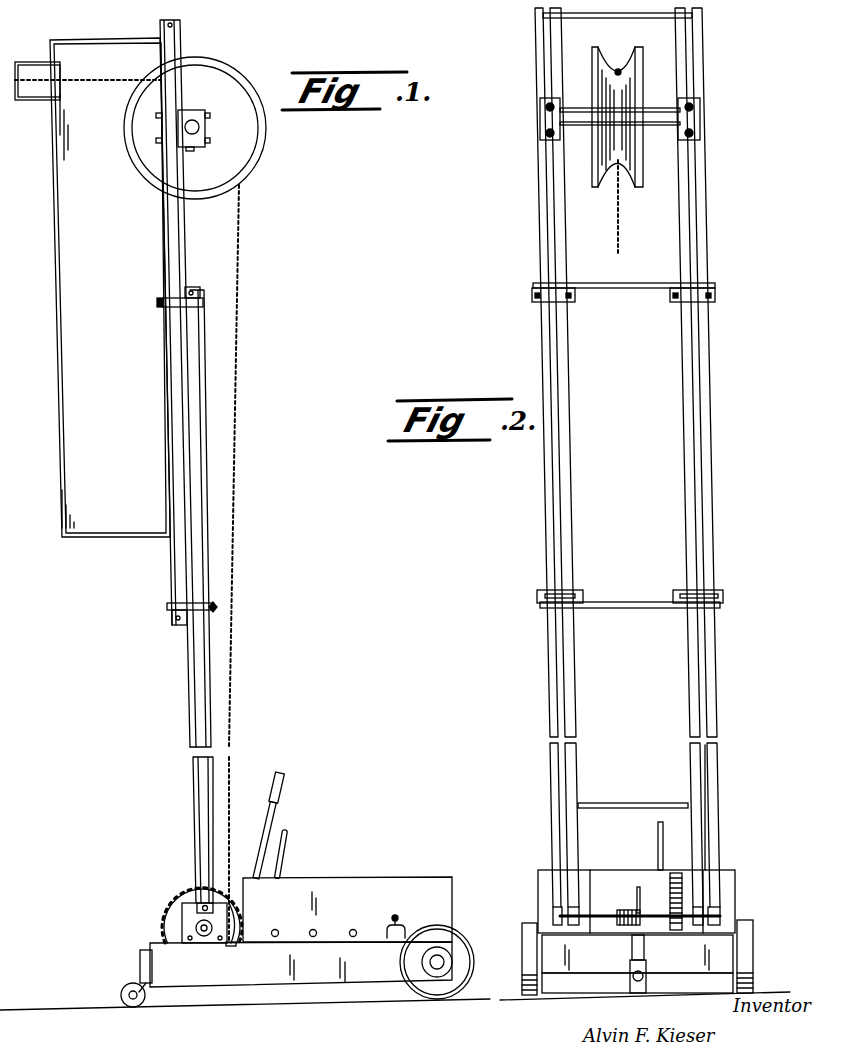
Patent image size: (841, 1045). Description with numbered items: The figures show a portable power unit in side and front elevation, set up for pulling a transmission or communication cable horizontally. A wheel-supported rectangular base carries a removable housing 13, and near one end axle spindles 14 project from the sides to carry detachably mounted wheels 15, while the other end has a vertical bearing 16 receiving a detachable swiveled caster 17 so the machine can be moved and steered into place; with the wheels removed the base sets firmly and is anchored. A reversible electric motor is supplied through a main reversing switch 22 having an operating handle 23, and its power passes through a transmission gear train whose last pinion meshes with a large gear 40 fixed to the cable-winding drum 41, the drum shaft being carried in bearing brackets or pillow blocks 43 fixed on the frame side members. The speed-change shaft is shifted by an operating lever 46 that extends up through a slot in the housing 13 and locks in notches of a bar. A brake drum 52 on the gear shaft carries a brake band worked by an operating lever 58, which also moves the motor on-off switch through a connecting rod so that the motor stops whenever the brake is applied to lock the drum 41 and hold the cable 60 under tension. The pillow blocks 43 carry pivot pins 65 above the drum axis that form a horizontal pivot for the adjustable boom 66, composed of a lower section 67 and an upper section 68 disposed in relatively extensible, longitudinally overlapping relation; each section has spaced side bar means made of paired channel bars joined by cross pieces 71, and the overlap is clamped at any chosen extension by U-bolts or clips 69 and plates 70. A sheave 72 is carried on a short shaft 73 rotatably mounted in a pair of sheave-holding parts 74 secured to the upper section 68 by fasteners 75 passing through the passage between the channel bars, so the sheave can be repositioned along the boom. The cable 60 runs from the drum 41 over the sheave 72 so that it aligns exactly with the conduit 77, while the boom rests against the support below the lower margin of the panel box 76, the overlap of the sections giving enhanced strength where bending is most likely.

In FIG. 1, the removable housing 13 is at (372, 878).
In FIG. 1, the axle spindles 14 is at (443, 957).
In FIG. 1, the wheels 15 is at (444, 971).
In FIG. 2, the wheels 15 is at (753, 950).
In FIG. 1, the vertical bearing 16 is at (140, 957).
In FIG. 1, the swiveled wheel or caster 17 is at (125, 1003).
In FIG. 2, the swiveled wheel or caster 17 is at (646, 978).
In FIG. 1, the main reversing switch 22 is at (403, 927).
In FIG. 1, the operating handle 23 is at (394, 915).
In FIG. 1, the large gear 40 is at (185, 892).
In FIG. 1, the cable-winding drum 41 is at (190, 897).
In FIG. 1, the bearing brackets or pillow blocks 43 is at (182, 925).
In FIG. 1, the operating lever 46 is at (295, 850).
In FIG. 2, the operating lever 46 is at (658, 830).
In FIG. 1, the brake drum 52 is at (231, 946).
In FIG. 1, the operating lever 58 is at (284, 790).
In FIG. 2, the operating lever 58 is at (710, 777).
In FIG. 1, the cable 60 is at (112, 82).
In FIG. 2, the cable 60 is at (618, 235).
In FIG. 1, the pivot pins 65 is at (232, 912).
In FIG. 1, the adjustable boom 66 is at (198, 466).
In FIG. 2, the adjustable boom 66 is at (538, 515).
In FIG. 1, the lower section 67 is at (190, 715).
In FIG. 1, the upper section 68 is at (180, 232).
In FIG. 1, the U-bolts or clips 69 is at (203, 302).
In FIG. 2, the U-bolts or clips 69 is at (533, 297).
In FIG. 1, the plates 70 is at (158, 298).
In FIG. 2, the plates 70 is at (540, 300).
In FIG. 1, the cross pieces 71 is at (178, 27).
In FIG. 2, the cross pieces 71 is at (607, 18).
In FIG. 1, the sheave 72 is at (248, 148).
In FIG. 2, the sheave 72 is at (638, 185).
In FIG. 1, the short shaft 73 is at (200, 127).
In FIG. 2, the short shaft 73 is at (590, 110).
In FIG. 1, the sheave-holding parts 74 is at (190, 152).
In FIG. 1, the fastener 75 is at (158, 140).
In FIG. 1, the panel box 76 is at (120, 540).
In FIG. 1, the conduit 77 is at (42, 100).